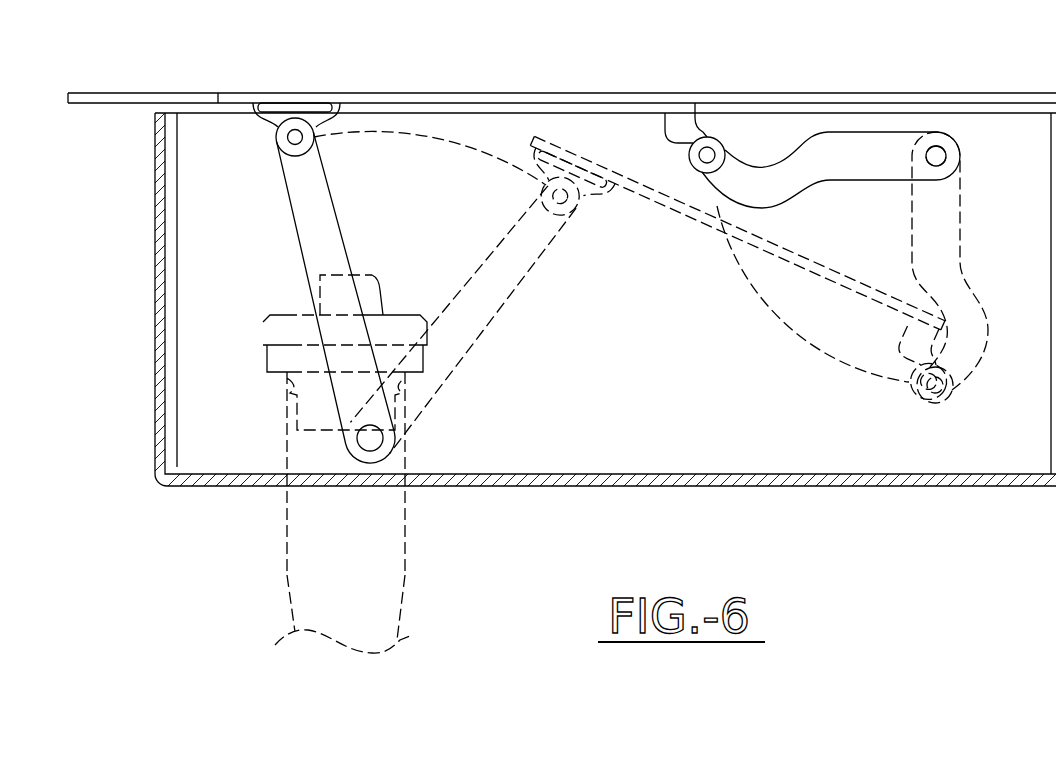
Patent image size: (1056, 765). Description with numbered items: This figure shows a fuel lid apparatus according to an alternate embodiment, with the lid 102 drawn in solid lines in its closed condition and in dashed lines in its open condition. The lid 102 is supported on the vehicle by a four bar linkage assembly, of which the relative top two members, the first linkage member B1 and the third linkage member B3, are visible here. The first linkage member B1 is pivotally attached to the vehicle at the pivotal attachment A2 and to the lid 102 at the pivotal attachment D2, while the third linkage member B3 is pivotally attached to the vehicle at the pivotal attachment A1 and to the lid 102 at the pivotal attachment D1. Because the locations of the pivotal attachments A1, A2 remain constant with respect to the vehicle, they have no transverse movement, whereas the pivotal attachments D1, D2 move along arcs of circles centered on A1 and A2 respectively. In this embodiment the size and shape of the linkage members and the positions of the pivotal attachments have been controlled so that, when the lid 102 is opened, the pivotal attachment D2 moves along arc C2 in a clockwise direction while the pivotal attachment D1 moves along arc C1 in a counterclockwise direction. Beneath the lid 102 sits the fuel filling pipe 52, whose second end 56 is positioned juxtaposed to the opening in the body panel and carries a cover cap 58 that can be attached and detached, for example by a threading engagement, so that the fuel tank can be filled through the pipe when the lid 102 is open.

The lid 102 is at (523, 97).
The pivotal attachment D2 is at (295, 137).
The pivotal attachment D1 is at (707, 155).
The pivotal attachment A1 is at (934, 157).
The pivotal attachment A2 is at (372, 438).
The first linkage member B1 is at (317, 230).
The third linkage member B3 is at (860, 157).
The arc C2 is at (465, 145).
The arc C1 is at (783, 328).
The cover cap 58 is at (285, 315).
The second end 56 is at (285, 438).
The fuel filling pipe 52 is at (313, 593).